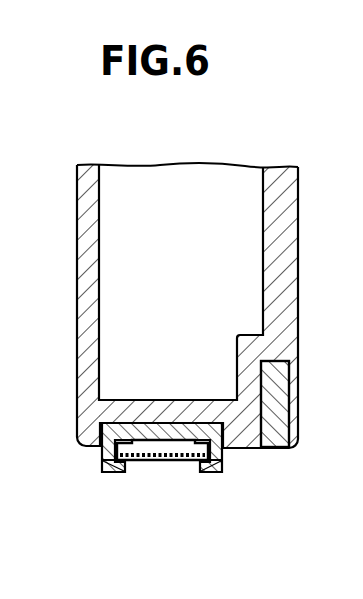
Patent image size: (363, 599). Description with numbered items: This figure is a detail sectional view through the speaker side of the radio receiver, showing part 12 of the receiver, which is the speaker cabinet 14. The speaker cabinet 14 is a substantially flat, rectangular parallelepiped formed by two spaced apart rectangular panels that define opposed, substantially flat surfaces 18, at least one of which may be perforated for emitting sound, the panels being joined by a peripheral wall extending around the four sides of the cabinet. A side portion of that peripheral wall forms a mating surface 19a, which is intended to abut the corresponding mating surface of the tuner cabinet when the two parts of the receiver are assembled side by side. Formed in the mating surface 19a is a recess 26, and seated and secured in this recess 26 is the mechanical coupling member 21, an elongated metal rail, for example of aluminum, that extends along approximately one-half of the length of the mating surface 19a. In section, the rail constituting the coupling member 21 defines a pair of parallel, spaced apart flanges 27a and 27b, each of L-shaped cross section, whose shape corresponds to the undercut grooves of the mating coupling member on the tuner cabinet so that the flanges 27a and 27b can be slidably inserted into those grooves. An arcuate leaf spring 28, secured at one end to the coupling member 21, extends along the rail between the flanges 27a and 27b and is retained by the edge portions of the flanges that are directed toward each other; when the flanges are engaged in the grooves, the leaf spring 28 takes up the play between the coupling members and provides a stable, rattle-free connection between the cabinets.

The part of radio receiver 12 is at (209, 159).
The speaker cabinet 14 is at (299, 197).
The flat surfaces of speaker cabinet 18 is at (78, 259).
The mating surface 19a is at (233, 448).
The mechanical coupling member 21 is at (148, 460).
The recess 26 is at (172, 424).
The flange 27a is at (112, 469).
The flange 27b is at (258, 507).
The arcuate leaf spring 28 is at (174, 461).